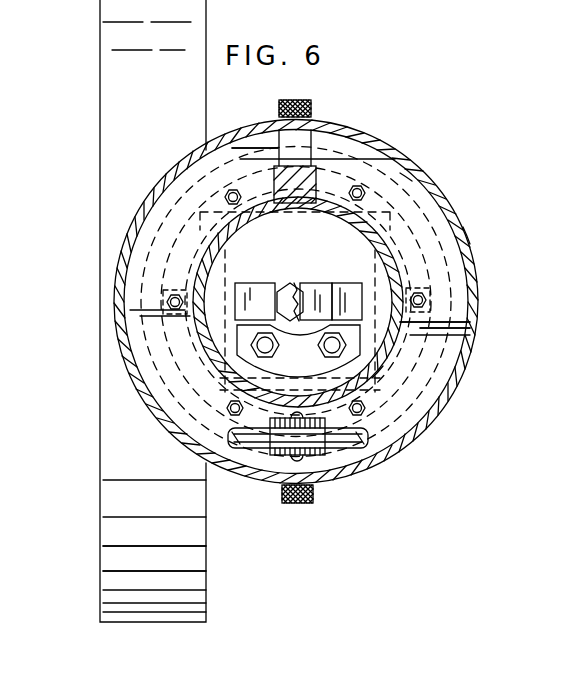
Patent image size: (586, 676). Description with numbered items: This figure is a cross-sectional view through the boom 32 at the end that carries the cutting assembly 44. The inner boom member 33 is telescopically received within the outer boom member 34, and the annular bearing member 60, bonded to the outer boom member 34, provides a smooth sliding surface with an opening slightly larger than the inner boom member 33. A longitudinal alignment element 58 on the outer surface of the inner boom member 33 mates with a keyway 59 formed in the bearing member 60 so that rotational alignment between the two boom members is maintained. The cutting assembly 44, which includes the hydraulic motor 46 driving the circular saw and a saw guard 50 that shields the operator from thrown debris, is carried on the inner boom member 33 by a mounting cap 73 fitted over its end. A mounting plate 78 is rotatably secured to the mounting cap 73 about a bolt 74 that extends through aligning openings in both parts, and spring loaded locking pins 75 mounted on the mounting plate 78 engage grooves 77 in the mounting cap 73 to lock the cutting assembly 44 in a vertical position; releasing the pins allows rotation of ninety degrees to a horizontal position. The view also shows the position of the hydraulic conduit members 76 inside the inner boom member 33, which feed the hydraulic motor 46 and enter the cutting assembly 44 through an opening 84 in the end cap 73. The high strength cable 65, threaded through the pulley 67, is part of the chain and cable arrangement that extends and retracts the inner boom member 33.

The boom 32 is at (482, 188).
The inner boom member 33 is at (400, 262).
The outer boom member 34 is at (463, 227).
The cutting assembly 44 is at (92, 491).
The hydraulic motor 46 is at (415, 332).
The saw guard 50 is at (115, 533).
The longitudinal alignment element 58 is at (316, 184).
The keyway 59 is at (274, 183).
The bearing member 60 is at (400, 173).
The cable 65 is at (372, 442).
The pulley 67 is at (258, 447).
The mounting cap 73 is at (470, 323).
The bolt 74 is at (285, 292).
The spring loaded locking pins 75 is at (312, 104).
The hydraulic conduit 76 is at (320, 356).
The grooves 77 is at (125, 282).
The mounting plate 78 is at (470, 335).
The opening 84 is at (383, 366).